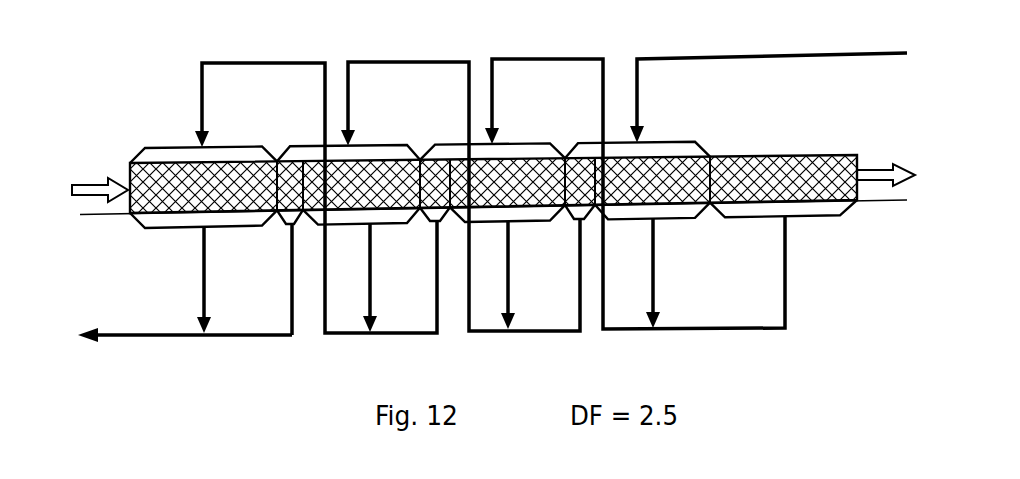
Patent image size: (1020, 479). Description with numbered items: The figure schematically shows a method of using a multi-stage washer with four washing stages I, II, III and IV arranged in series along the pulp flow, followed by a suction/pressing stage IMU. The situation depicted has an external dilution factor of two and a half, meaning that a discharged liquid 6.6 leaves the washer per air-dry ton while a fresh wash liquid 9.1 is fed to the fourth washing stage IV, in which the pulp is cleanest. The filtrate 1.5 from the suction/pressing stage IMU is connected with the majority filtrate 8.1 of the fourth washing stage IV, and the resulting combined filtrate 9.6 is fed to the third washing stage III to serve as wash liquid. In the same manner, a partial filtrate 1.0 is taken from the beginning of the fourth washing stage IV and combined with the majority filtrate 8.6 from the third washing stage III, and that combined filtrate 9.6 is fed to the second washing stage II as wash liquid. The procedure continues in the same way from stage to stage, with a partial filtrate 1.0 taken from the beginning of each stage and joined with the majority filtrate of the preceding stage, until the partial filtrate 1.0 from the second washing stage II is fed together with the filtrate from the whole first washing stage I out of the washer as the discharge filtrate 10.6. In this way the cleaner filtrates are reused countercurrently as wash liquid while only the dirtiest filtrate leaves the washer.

The first washing stage I is at (203, 188).
The second washing stage II is at (348, 185).
The third washing stage III is at (492, 182).
The fourth washing stage IV is at (637, 181).
The suction/pressing stage IMU is at (783, 188).
The majority of the filtrate from the fourth washing stage 8.1 is at (361, 224).
The liquid discharged per ADT 6.6 is at (887, 148).
The combined filtrate fed as wash liquid 9.6 is at (490, 182).
The fresh wash liquid 9.1 is at (768, 82).
The majority of the filtrate from the third washing stage 8.6 is at (425, 276).
The part of the filtrate taken from the beginning of a washing stage 1.0 is at (415, 279).
The filtrate fed out of the washer 10.6 is at (185, 285).
The filtrate from the suction/pressing stage 1.5 is at (805, 246).